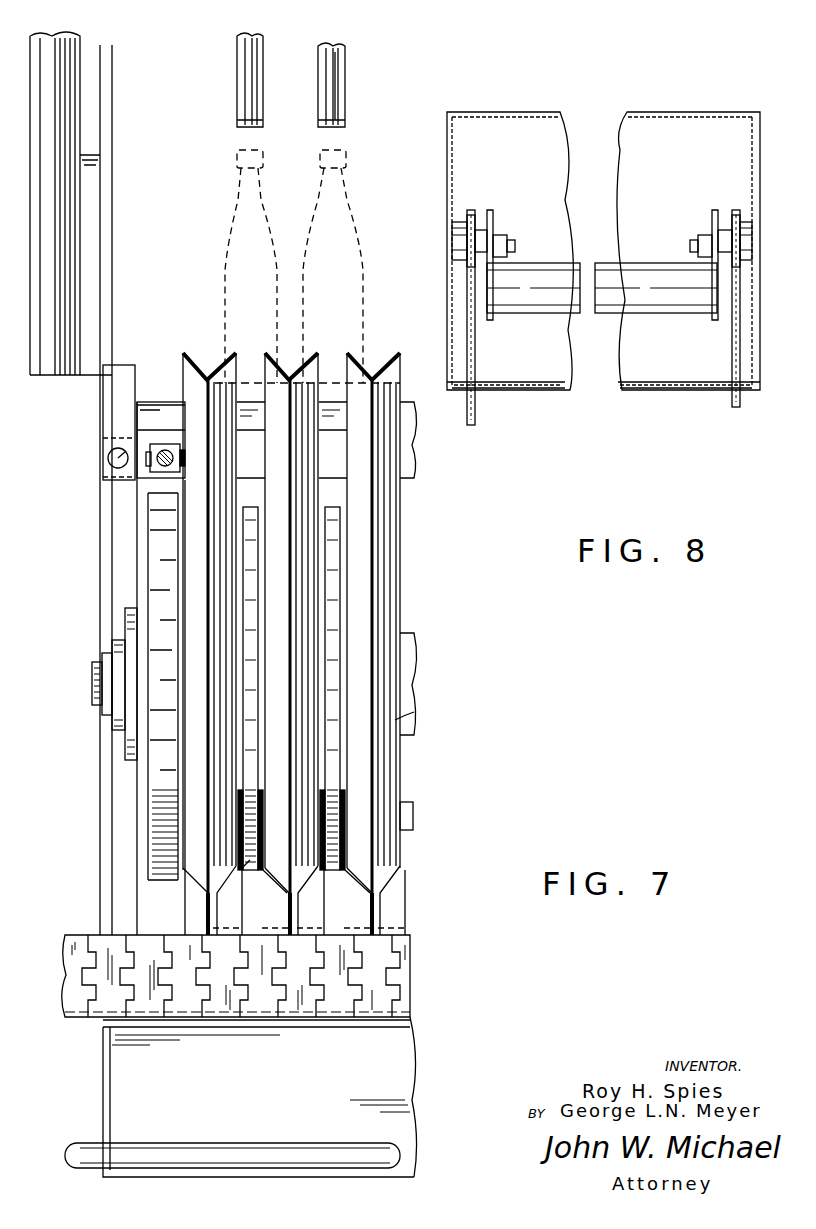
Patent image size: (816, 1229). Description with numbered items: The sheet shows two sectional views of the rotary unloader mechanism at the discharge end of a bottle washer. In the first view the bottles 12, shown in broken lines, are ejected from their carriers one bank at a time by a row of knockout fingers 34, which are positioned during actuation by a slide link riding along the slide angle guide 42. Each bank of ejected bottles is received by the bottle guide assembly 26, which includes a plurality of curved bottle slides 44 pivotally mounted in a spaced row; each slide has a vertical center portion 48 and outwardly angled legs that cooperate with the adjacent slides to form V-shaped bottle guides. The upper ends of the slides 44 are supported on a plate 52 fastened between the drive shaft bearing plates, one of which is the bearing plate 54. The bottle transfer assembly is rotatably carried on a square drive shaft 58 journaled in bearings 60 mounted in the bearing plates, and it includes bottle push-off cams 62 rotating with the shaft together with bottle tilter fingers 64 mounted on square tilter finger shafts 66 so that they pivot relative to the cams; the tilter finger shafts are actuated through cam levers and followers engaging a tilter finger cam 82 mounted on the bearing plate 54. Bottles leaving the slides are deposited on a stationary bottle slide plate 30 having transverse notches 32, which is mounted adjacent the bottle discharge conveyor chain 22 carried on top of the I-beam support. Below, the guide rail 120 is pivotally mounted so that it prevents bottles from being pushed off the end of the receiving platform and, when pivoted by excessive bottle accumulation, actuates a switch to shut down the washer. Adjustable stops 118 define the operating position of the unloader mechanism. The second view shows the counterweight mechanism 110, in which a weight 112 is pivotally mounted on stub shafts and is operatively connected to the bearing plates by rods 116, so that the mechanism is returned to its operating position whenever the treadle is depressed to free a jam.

In FIG. 7, the bottles 12 is at (232, 214).
In FIG. 7, the bottle discharge conveyor chain 22 is at (68, 982).
In FIG. 7, the bottle guide assembly 26 is at (414, 536).
In FIG. 7, the stationary bottle slide plate 30 is at (400, 922).
In FIG. 7, the transverse notches 32 is at (272, 908).
In FIG. 7, the knockout fingers 34 is at (245, 108).
In FIG. 7, the slide angle guide 42 is at (70, 105).
In FIG. 7, the curved bottle slides 44 is at (181, 364).
In FIG. 7, the vertical center portion 48 is at (396, 722).
In FIG. 7, the plate 52 is at (415, 462).
In FIG. 7, the drive shaft bearing plate 54 is at (145, 791).
In FIG. 7, the square drive shaft 58 is at (92, 690).
In FIG. 7, the bearings 60 is at (100, 660).
In FIG. 7, the bottle push-off cams 62 is at (335, 600).
In FIG. 7, the bottle tilter fingers 64 is at (345, 795).
In FIG. 7, the square tilter finger shafts 66 is at (414, 810).
In FIG. 7, the tilter finger cam 82 is at (160, 838).
In FIG. 8, the counterweight mechanism 110 is at (660, 195).
In FIG. 8, the weight 112 is at (543, 295).
In FIG. 7, the rods 116 is at (160, 472).
In FIG. 8, the rods 116 is at (476, 416).
In FIG. 7, the adjustable stops 118 is at (106, 456).
In FIG. 7, the guide rail 120 is at (160, 1152).